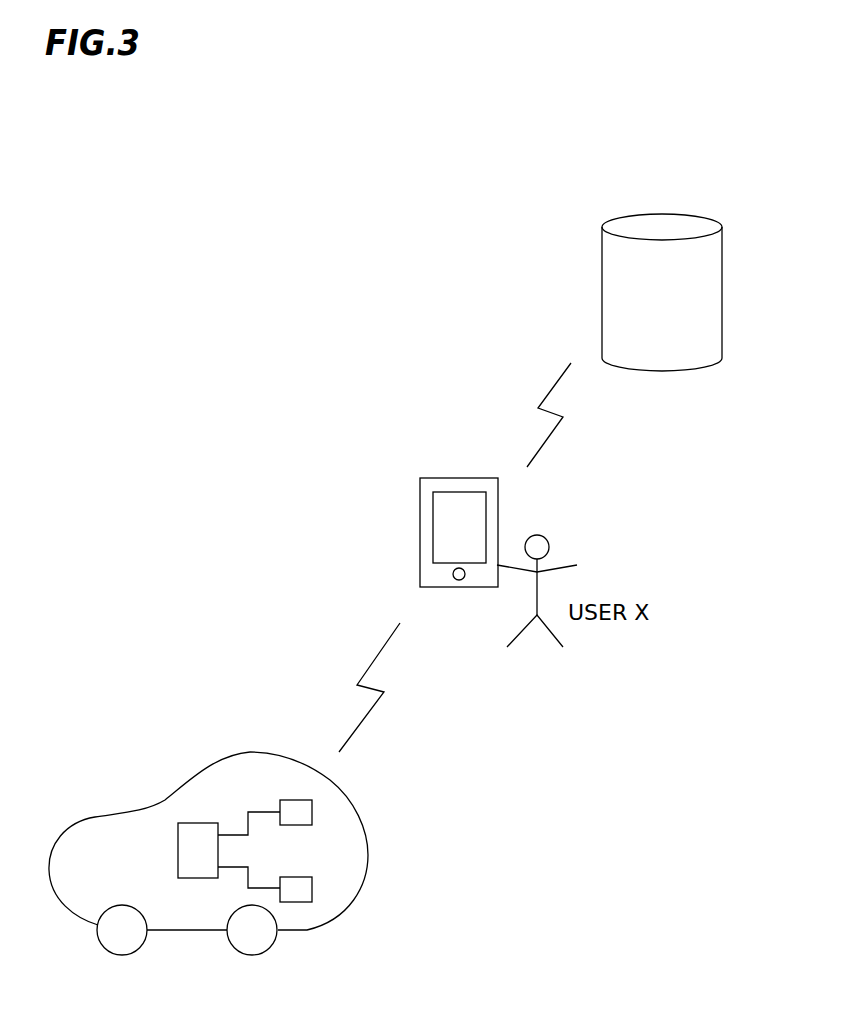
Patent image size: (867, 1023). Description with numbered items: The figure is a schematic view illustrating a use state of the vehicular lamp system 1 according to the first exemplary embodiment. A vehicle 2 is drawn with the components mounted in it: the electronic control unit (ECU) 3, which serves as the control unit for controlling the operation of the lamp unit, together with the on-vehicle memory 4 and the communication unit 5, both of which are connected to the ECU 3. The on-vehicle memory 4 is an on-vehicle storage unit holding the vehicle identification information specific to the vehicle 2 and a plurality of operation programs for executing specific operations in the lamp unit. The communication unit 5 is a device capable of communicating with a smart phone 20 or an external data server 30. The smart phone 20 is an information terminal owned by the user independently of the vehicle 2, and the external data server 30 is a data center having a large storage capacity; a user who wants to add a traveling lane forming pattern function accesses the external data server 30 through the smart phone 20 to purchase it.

The vehicular lamp system 1 is at (301, 375).
The vehicle 2 is at (250, 750).
The electronic control unit (ECU) 3 is at (195, 823).
The on-vehicle memory 4 is at (313, 887).
The communication unit 5 is at (313, 808).
The smart phone 20 is at (463, 478).
The external data server 30 is at (655, 370).